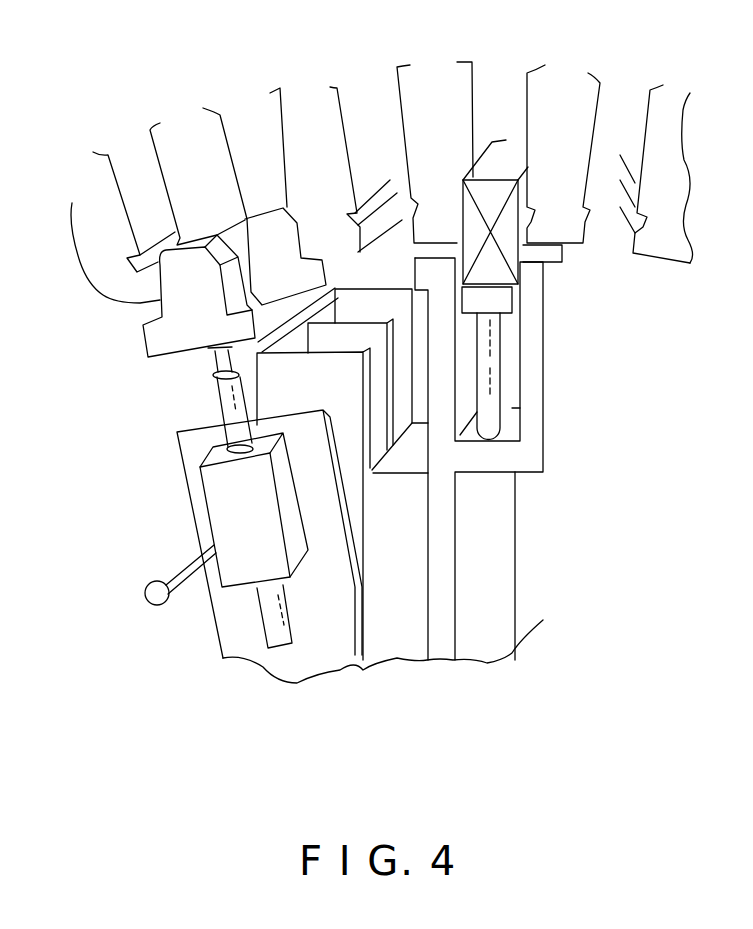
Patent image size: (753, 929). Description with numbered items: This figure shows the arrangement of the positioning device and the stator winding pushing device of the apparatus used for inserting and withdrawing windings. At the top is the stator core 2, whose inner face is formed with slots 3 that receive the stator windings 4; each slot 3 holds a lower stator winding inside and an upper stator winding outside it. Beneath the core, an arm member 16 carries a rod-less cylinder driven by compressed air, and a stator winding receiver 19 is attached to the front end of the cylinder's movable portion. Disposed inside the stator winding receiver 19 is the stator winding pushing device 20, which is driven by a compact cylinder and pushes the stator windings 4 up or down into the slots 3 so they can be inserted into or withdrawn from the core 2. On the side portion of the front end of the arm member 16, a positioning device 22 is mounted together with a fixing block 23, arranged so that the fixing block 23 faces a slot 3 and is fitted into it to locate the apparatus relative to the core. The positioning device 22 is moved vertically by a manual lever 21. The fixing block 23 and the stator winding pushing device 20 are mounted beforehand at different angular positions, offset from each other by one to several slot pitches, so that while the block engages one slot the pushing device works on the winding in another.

The stator core 2 is at (662, 247).
The slot 3 is at (232, 134).
The stator winding 4 is at (512, 268).
The arm member 16 is at (240, 632).
The stator winding receiver 19 is at (532, 452).
The stator winding pushing device 20 is at (497, 301).
The manual lever 21 is at (155, 600).
The positioning device 22 is at (237, 500).
The fixing block 23 is at (183, 294).